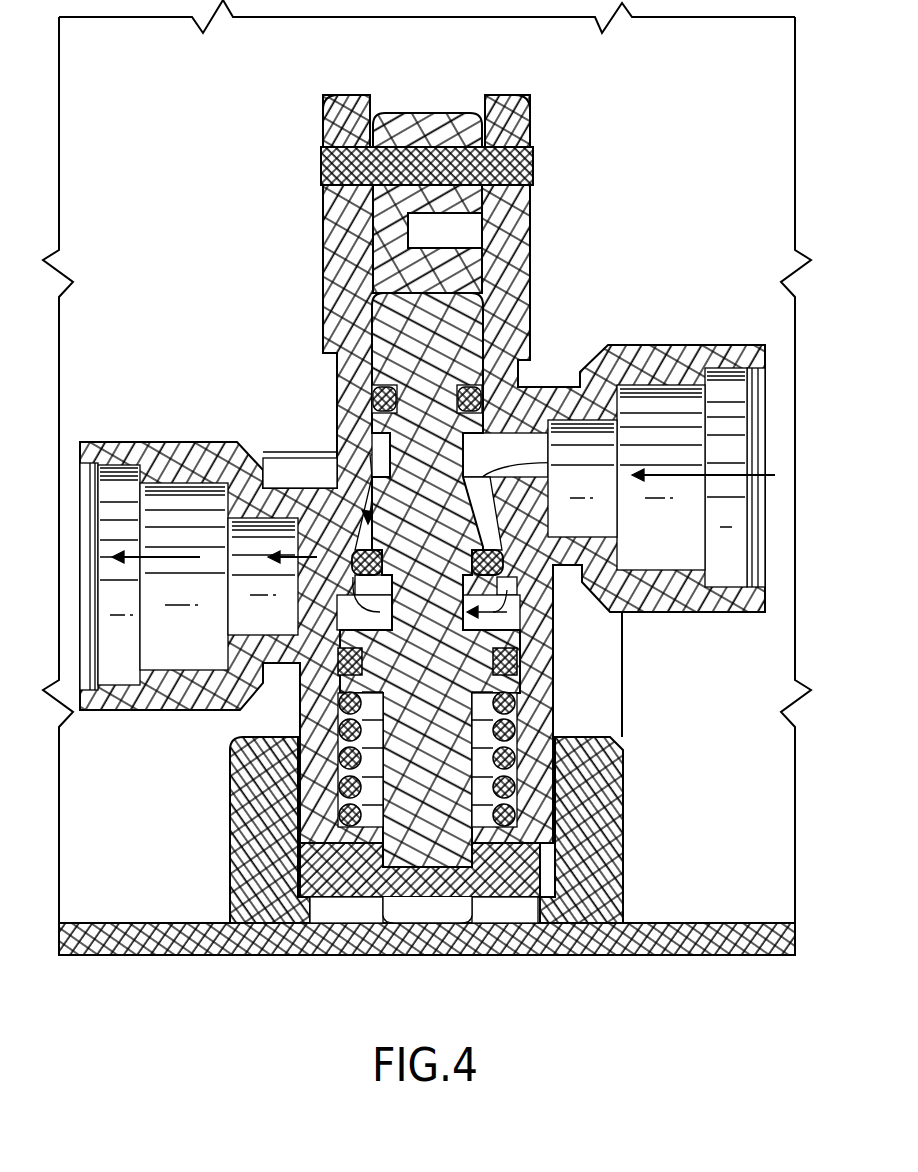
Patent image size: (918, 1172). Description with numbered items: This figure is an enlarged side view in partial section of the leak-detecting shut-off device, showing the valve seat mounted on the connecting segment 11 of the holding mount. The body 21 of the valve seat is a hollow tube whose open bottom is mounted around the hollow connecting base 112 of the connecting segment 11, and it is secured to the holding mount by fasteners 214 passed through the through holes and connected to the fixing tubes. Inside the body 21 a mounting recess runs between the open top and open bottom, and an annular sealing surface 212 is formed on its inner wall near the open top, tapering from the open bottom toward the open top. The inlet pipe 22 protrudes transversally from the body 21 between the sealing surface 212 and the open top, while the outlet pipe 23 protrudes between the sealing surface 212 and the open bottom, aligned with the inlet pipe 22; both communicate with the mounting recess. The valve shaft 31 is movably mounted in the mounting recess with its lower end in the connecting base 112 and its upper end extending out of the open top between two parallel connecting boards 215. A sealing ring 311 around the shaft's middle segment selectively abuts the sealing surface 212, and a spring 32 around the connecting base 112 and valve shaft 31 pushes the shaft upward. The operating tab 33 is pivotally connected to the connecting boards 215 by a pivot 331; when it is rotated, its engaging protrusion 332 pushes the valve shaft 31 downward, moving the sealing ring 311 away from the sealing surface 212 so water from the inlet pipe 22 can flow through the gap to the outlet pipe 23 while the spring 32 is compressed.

The connecting segment 11 is at (637, 843).
The connecting base 112 is at (357, 785).
The body 21 is at (422, 490).
The sealing surface 212 is at (522, 553).
The fasteners 214 is at (443, 910).
The connecting boards 215 is at (525, 118).
The inlet pipe 22 is at (677, 350).
The outlet pipe 23 is at (175, 452).
The valve shaft 31 is at (376, 327).
The sealing ring 311 is at (503, 565).
The spring 32 is at (348, 758).
The operating tab 33 is at (432, 163).
The pivot 331 is at (520, 167).
The engaging protrusion 332 is at (390, 268).